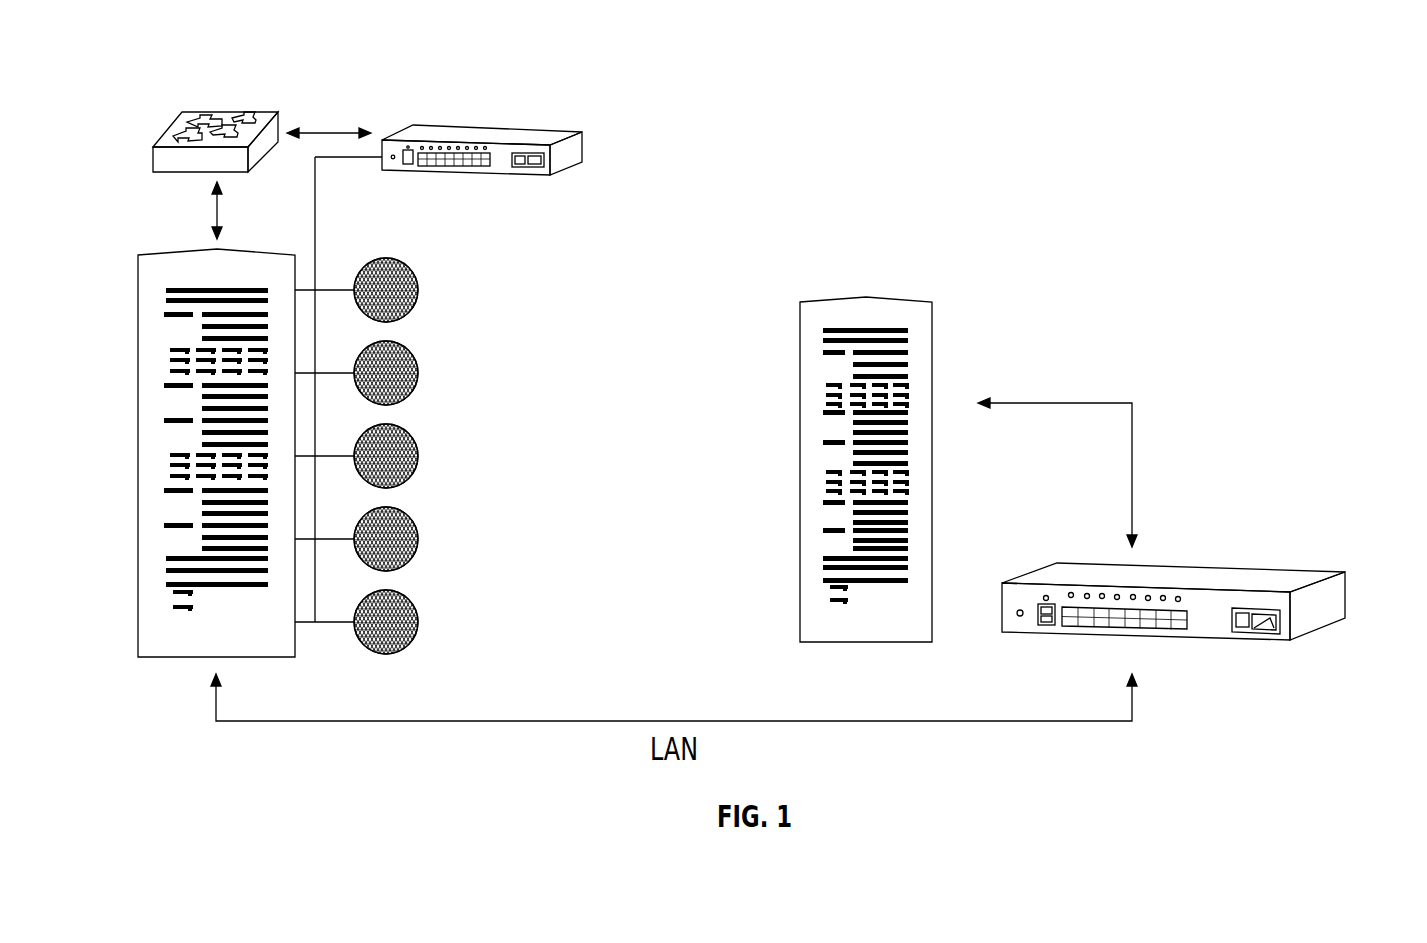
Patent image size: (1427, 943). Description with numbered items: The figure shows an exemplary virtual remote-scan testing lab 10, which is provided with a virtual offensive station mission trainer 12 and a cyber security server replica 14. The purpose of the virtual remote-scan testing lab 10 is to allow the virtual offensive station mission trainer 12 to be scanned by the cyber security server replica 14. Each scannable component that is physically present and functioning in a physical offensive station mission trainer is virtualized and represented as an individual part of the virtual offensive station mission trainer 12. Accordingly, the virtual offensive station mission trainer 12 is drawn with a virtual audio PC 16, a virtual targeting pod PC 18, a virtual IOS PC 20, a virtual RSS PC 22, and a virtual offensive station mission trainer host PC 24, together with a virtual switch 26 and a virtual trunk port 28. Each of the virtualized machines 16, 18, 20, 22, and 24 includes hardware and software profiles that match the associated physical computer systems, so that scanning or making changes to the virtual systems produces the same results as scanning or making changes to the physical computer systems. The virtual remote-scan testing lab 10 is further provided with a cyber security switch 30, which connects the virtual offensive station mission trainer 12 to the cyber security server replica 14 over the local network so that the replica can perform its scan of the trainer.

The virtual remote-scan testing lab 10 is at (1324, 76).
The virtual offensive station mission trainer 12 is at (183, 720).
The cyber security server replica 14 is at (865, 299).
The virtual audio PC 16 is at (418, 290).
The virtual targeting pod PC 18 is at (418, 373).
The virtual IOS PC 20 is at (418, 456).
The virtual RSS PC 22 is at (418, 539).
The virtual offensive station mission trainer host PC 24 is at (418, 622).
The virtual switch 26 is at (587, 148).
The virtual trunk port 28 is at (175, 173).
The cyber security switch 30 is at (1347, 598).